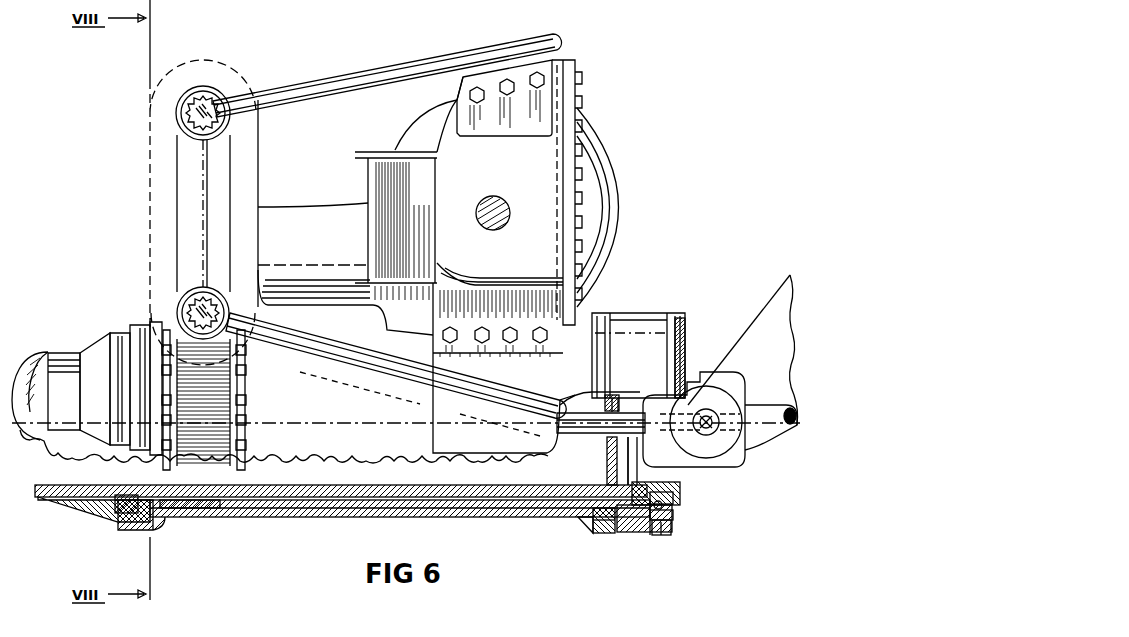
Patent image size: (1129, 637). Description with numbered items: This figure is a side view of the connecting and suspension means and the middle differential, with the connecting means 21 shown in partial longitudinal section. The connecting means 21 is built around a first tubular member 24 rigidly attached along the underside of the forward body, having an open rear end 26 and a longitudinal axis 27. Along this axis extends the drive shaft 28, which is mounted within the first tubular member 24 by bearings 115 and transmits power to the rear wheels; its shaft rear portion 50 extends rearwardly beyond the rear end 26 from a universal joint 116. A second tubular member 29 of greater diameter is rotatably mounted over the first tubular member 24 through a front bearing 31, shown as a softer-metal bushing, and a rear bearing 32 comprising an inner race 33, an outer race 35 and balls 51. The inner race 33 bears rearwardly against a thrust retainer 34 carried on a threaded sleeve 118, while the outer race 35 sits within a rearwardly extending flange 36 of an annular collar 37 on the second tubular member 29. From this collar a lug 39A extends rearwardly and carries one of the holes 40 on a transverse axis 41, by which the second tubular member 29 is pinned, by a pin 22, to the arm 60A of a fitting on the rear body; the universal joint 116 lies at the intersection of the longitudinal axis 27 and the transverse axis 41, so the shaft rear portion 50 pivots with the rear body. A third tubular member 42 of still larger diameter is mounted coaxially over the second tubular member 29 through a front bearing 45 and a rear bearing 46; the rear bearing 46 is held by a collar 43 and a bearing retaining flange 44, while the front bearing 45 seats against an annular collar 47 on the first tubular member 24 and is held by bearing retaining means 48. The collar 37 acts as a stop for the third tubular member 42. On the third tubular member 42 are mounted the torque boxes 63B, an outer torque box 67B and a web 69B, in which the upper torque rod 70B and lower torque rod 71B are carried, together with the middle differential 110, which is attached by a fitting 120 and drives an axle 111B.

The upper left-hand torque rod 70B is at (210, 96).
The outer torque box 67B is at (150, 118).
The web 69B is at (203, 153).
The torque box 63B is at (177, 180).
The lower left-hand torque rod 71B is at (187, 300).
The middle differential 110 is at (300, 205).
The axle 111B is at (487, 197).
The fitting 120 is at (537, 323).
The connecting means 21 is at (670, 311).
The bearings 115 is at (615, 408).
The sleeve 118 is at (652, 483).
The arm 60A is at (790, 275).
The transverse axis 41 is at (703, 405).
The universal joint 116 is at (713, 408).
The holes 40 is at (712, 416).
The lug 39A is at (740, 403).
The shaft rear portion 50 is at (760, 445).
The pin 22 is at (713, 428).
The open rear end 26 is at (672, 492).
The longitudinal axis 27 is at (15, 415).
The first tubular member 24 is at (45, 355).
The drive shaft 28 is at (26, 447).
The front bearing 45 is at (148, 495).
The front bearing 31 is at (218, 500).
The annular collar 47 is at (100, 518).
The bearing retaining means 48 is at (130, 527).
The second tubular member 29 is at (310, 518).
The third tubular member 42 is at (420, 518).
The collar 43 is at (582, 527).
The rear bearing 46 is at (603, 532).
The bearing retaining flange 44 is at (607, 535).
The annular collar 37 is at (628, 533).
The outer race 35 is at (655, 528).
The rear bearing 32 is at (663, 535).
The rearwardly extending flange 36 is at (665, 528).
The thrust retainer 34 is at (668, 520).
The balls 51 is at (667, 512).
The inner race 33 is at (665, 506).